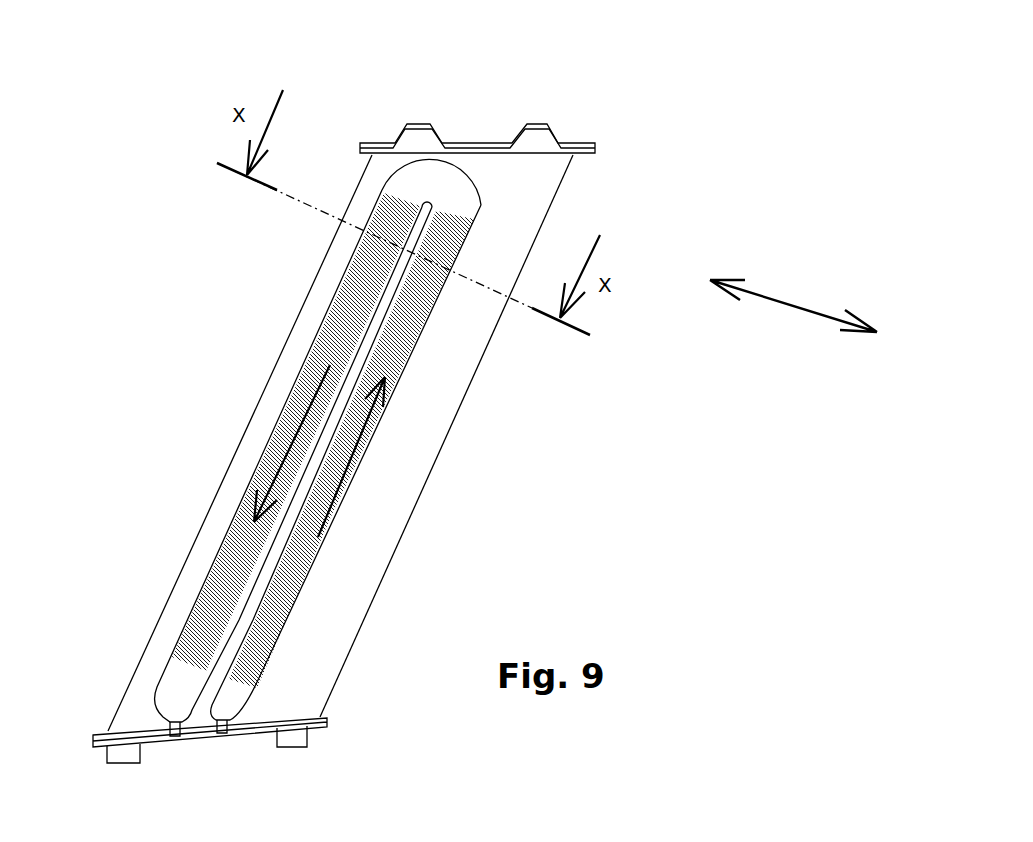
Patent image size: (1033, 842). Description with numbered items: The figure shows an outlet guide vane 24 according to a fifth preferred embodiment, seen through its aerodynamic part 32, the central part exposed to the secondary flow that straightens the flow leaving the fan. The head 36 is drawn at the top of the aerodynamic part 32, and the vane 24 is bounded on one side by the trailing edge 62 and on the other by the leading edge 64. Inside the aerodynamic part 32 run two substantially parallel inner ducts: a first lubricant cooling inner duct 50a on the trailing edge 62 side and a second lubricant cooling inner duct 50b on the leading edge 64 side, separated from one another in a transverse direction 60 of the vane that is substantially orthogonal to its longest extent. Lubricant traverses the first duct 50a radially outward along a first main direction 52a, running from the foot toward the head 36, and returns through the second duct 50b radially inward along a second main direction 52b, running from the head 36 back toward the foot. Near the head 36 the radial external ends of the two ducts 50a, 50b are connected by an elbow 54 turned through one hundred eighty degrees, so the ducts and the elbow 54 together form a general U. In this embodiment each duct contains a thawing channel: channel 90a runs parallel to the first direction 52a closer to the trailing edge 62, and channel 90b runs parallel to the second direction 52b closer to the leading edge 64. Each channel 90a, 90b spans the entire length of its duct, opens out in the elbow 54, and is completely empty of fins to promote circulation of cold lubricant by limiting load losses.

The outlet guide vane 24 is at (500, 86).
The aerodynamic part 32 is at (395, 391).
The head 36 is at (533, 142).
The elbow 54 is at (458, 197).
The transverse direction 60 is at (793, 305).
The trailing edge 62 is at (480, 372).
The leading edge 64 is at (213, 498).
The first lubricant cooling inner duct 50a is at (376, 462).
The second lubricant cooling inner duct 50b is at (247, 456).
The first main direction 52a is at (323, 510).
The second main direction 52b is at (283, 447).
The thawing channel 90a is at (308, 585).
The thawing channel 90b is at (218, 555).